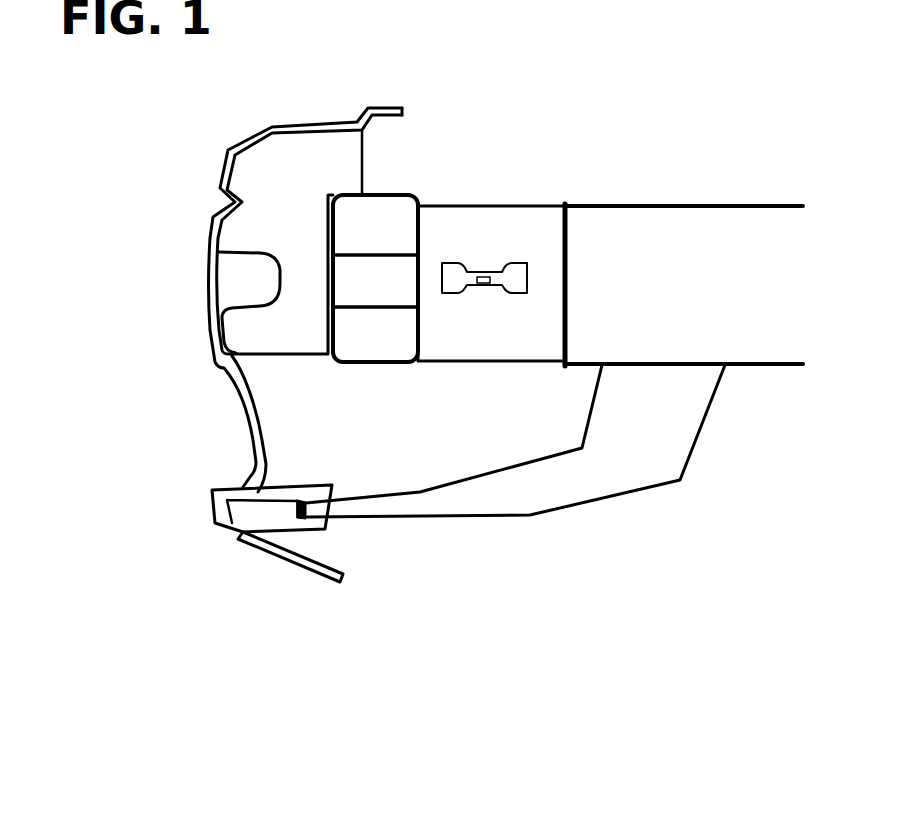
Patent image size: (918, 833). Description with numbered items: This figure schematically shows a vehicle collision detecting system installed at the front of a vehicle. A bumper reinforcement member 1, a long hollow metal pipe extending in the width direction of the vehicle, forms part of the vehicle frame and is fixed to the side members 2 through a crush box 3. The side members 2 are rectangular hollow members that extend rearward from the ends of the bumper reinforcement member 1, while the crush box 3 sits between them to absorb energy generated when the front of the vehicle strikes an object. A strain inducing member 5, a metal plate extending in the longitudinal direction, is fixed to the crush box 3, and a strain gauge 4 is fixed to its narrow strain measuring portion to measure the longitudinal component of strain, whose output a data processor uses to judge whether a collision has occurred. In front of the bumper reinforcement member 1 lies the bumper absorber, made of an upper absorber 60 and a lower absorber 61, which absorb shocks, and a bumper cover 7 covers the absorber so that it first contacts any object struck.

The bumper reinforcement member 1 is at (388, 215).
The side members 2 is at (638, 222).
The crush box 3 is at (522, 212).
The strain gauge 4 is at (482, 285).
The strain inducing member 5 is at (448, 263).
The bumper cover 7 is at (207, 287).
The upper absorber 60 is at (287, 157).
The lower absorber 61 is at (263, 510).